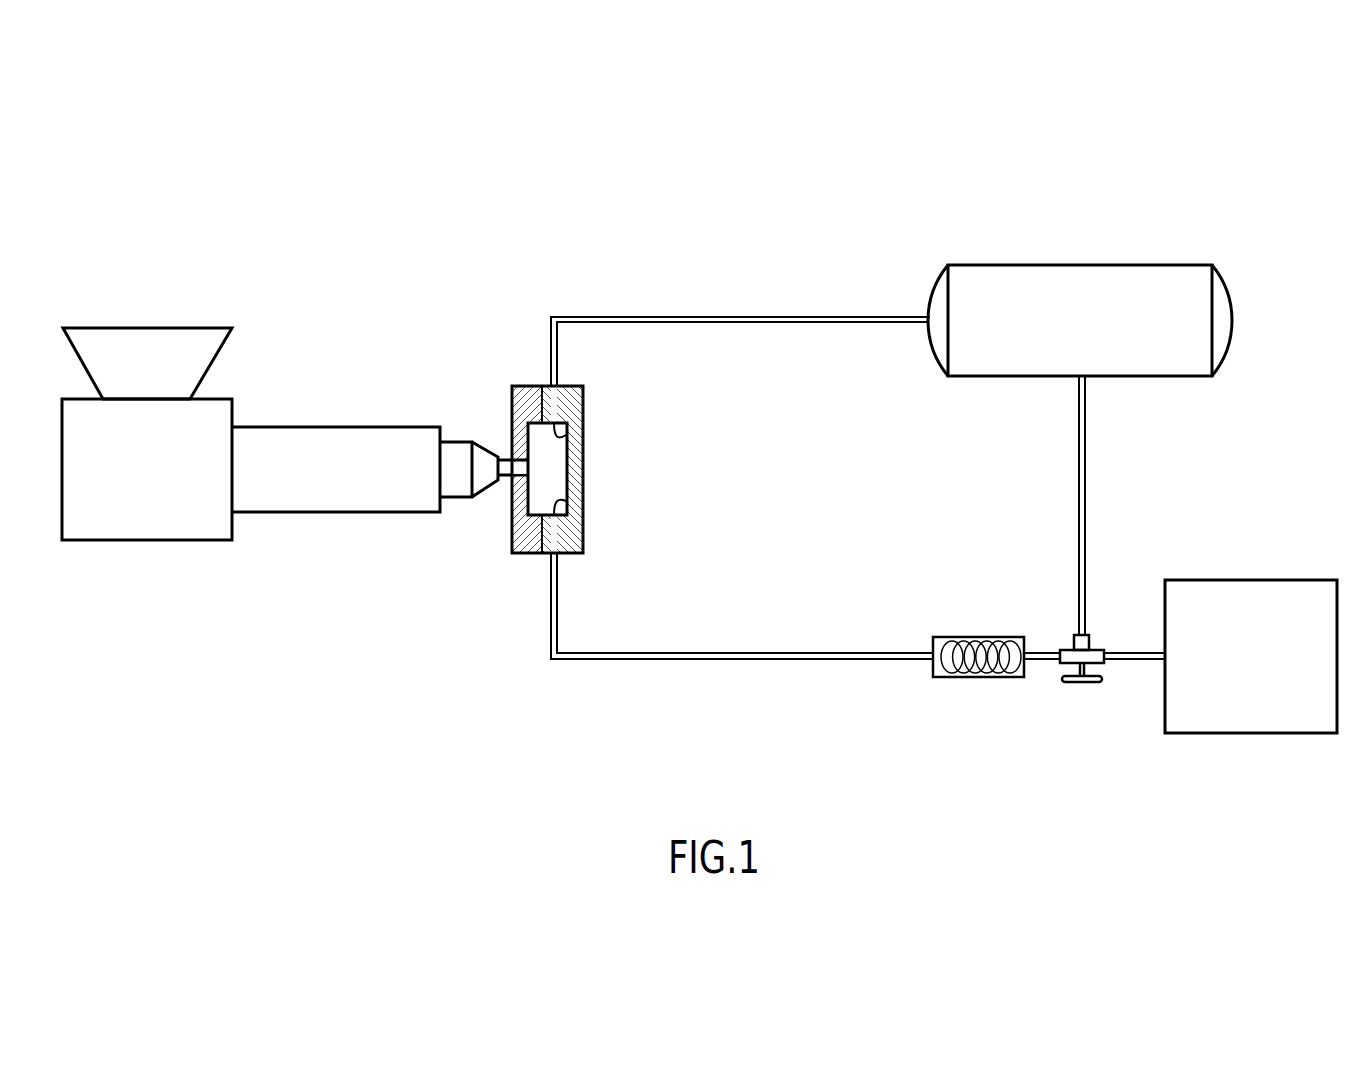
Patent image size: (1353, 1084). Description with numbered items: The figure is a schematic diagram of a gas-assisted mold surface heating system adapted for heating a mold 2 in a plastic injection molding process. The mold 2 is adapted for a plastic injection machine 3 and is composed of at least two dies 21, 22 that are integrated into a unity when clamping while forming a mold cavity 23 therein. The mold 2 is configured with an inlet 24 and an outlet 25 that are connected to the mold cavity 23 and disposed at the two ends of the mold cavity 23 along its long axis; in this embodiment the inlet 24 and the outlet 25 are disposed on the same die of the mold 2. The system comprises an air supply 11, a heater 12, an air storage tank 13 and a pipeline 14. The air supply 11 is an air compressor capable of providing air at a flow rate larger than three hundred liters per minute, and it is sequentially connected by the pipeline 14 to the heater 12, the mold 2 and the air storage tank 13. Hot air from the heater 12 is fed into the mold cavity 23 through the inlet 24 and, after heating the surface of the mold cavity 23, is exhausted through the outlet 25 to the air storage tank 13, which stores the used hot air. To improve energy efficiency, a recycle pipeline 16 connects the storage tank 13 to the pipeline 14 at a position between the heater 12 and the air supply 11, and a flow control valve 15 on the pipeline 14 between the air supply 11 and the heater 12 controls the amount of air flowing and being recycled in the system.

The mold 2 is at (537, 438).
The plastic injection machine 3 is at (182, 576).
The air supply 11 is at (1228, 592).
The heater 12 is at (955, 677).
The air storage tank 13 is at (1113, 300).
The pipeline 14 is at (657, 657).
The flow control valve 15 is at (1092, 660).
The recycle pipeline 16 is at (760, 317).
The die 21 is at (515, 523).
The die 22 is at (583, 547).
The mold cavity 23 is at (537, 453).
The inlet 24 is at (566, 501).
The outlet 25 is at (566, 435).